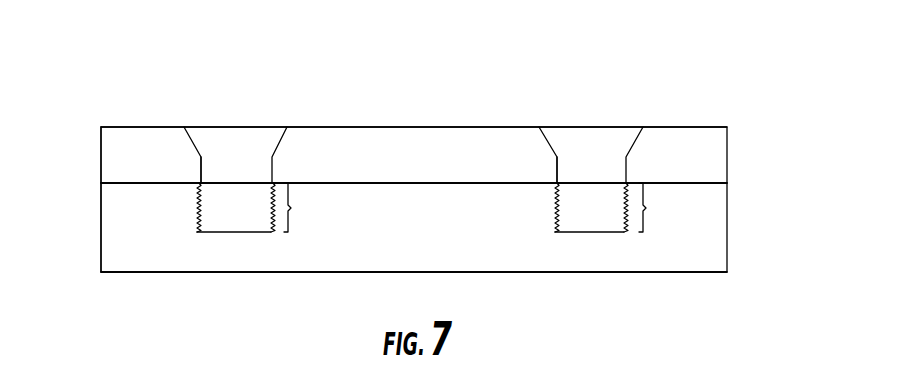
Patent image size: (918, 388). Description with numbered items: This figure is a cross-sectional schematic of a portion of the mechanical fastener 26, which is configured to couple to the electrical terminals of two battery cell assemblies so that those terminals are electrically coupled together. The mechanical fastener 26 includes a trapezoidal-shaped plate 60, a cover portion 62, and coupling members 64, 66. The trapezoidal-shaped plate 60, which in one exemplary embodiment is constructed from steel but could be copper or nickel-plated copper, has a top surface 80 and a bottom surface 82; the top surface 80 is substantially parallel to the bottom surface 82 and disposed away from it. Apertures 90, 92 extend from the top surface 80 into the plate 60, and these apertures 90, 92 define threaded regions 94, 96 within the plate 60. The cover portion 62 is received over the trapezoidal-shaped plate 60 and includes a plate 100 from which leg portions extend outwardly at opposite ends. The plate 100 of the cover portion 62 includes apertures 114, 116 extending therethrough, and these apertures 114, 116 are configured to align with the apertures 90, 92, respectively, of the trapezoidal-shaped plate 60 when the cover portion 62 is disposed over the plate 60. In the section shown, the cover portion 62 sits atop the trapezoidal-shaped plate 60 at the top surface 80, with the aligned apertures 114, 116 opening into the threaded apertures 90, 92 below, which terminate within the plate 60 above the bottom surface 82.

The mechanical fastener 26 is at (503, 74).
The trapezoidal-shaped plate 60 is at (735, 217).
The cover portion 62 is at (735, 140).
The coupling member 64 is at (247, 167).
The coupling member 66 is at (603, 167).
The top surface 80 is at (467, 182).
The bottom surface 82 is at (516, 273).
The aperture 90 is at (197, 206).
The aperture 92 is at (553, 207).
The threaded region 94 is at (301, 207).
The threaded region 96 is at (657, 207).
The plate 100 is at (109, 164).
The aperture 114 is at (201, 160).
The aperture 116 is at (557, 158).